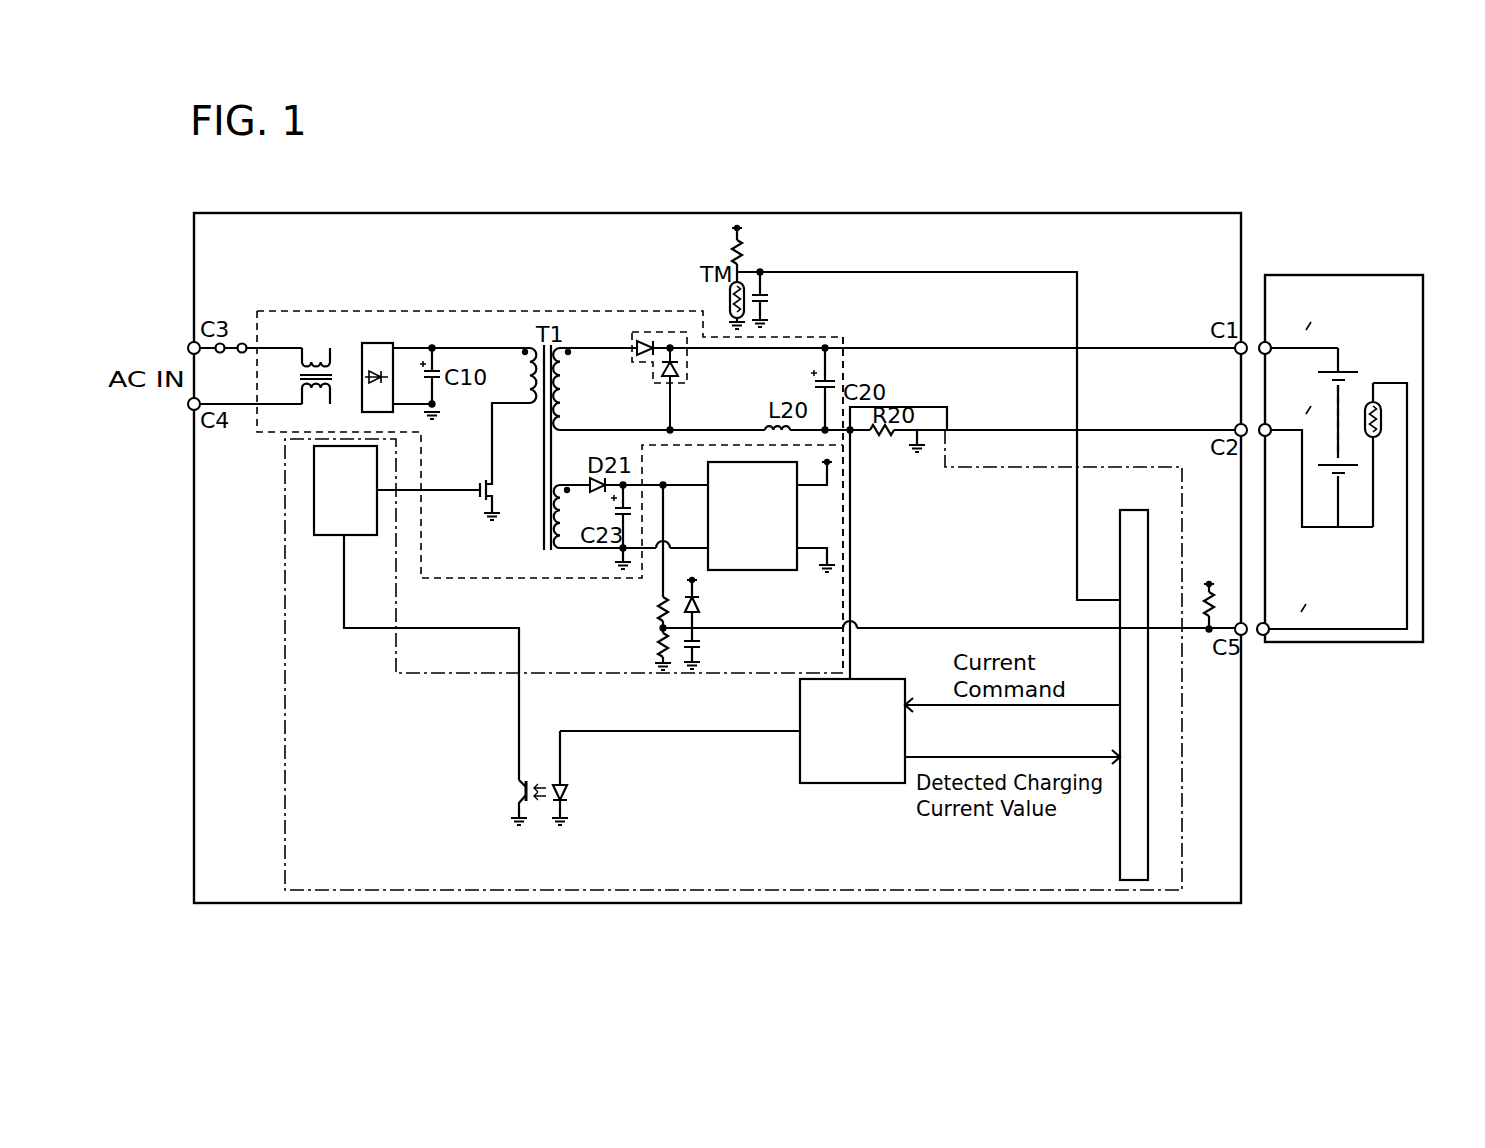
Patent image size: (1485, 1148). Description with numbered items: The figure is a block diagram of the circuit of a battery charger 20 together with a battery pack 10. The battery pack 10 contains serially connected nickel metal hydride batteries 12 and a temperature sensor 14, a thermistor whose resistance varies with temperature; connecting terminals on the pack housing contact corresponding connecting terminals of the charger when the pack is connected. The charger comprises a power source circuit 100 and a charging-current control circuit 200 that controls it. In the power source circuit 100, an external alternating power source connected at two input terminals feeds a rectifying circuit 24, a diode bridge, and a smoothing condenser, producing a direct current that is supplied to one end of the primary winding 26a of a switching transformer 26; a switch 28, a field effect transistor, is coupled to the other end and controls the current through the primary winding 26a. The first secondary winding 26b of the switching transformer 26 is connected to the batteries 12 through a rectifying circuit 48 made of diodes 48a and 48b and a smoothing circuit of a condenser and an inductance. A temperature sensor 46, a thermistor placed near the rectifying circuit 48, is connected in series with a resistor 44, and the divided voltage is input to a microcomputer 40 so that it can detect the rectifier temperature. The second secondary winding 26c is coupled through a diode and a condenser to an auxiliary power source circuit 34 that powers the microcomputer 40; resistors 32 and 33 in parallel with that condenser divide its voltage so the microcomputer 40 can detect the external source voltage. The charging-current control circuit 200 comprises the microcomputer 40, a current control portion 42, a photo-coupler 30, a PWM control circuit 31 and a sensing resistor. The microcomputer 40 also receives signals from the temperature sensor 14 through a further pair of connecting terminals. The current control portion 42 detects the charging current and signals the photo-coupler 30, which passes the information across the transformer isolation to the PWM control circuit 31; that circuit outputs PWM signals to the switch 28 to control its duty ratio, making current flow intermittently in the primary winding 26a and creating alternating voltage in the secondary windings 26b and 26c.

The battery pack 10 is at (1382, 268).
The nickel metal hydride batteries 12 is at (1350, 370).
The temperature sensor 14 is at (1385, 420).
The battery charger 20 is at (1203, 207).
The rectifying circuit 24 is at (362, 345).
The switching transformer 26 is at (547, 328).
The primary winding 26a is at (527, 343).
The first secondary winding 26b is at (568, 343).
The second secondary winding 26c is at (553, 552).
The switch 28 is at (478, 500).
The photo-coupler 30 is at (505, 808).
The PWM control circuit 31 is at (314, 498).
The resistor 32 is at (660, 607).
The resistor 33 is at (660, 648).
The auxiliary power source circuit 34 is at (762, 572).
The microcomputer 40 is at (1150, 540).
The current control portion 42 is at (900, 679).
The resistor 44 is at (735, 250).
The temperature sensor 46 is at (730, 300).
The rectifying circuit 48 is at (645, 330).
The diode 48a is at (640, 355).
The diode 48b is at (680, 372).
The power source circuit 100 is at (843, 337).
The charging-current control circuit 200 is at (1205, 586).